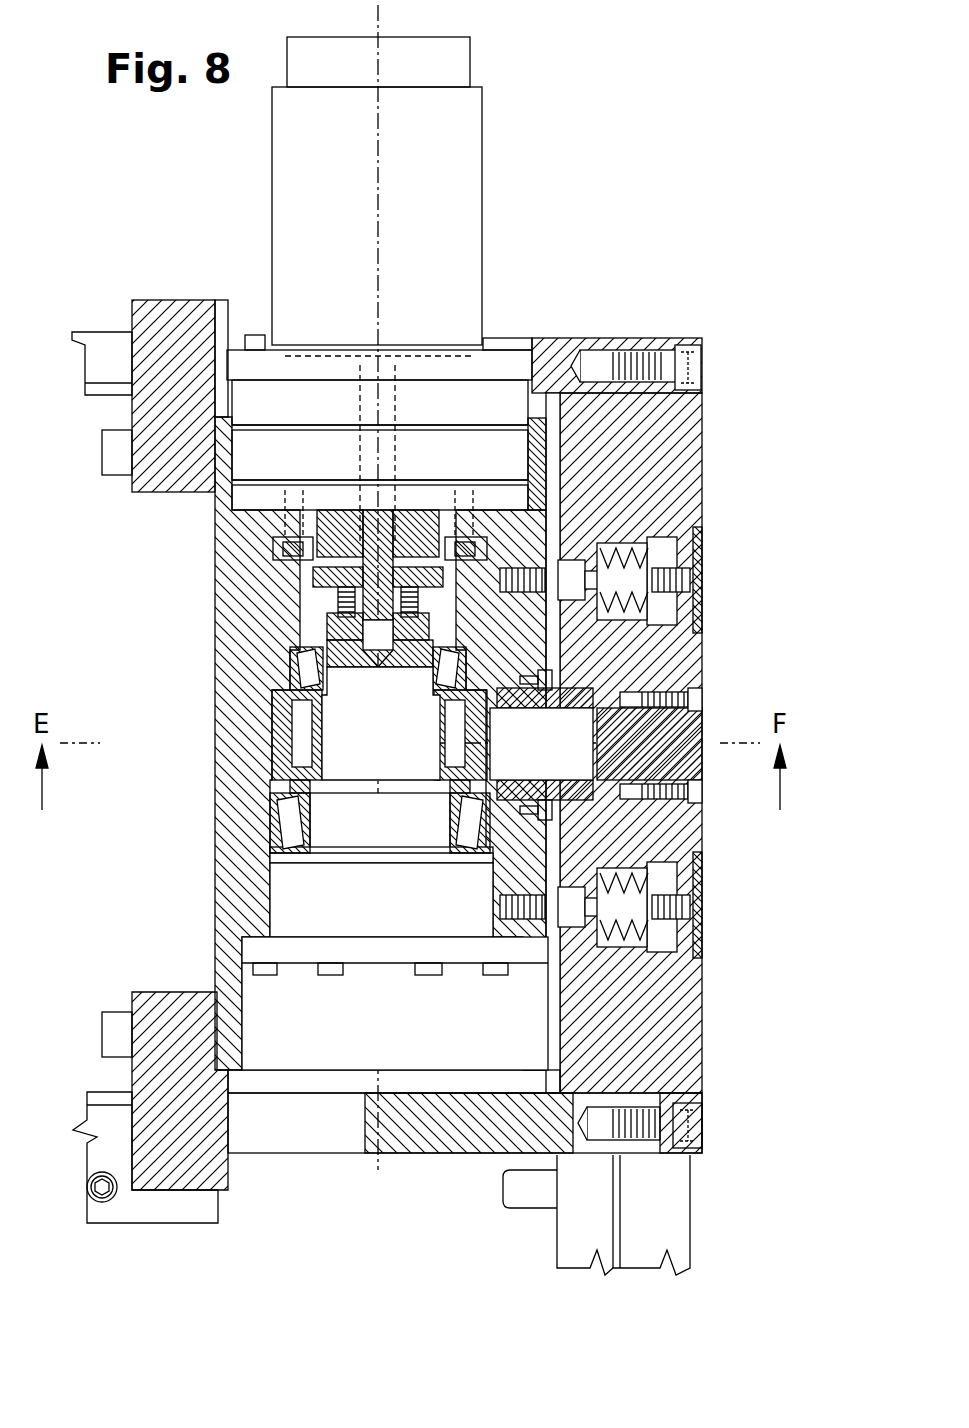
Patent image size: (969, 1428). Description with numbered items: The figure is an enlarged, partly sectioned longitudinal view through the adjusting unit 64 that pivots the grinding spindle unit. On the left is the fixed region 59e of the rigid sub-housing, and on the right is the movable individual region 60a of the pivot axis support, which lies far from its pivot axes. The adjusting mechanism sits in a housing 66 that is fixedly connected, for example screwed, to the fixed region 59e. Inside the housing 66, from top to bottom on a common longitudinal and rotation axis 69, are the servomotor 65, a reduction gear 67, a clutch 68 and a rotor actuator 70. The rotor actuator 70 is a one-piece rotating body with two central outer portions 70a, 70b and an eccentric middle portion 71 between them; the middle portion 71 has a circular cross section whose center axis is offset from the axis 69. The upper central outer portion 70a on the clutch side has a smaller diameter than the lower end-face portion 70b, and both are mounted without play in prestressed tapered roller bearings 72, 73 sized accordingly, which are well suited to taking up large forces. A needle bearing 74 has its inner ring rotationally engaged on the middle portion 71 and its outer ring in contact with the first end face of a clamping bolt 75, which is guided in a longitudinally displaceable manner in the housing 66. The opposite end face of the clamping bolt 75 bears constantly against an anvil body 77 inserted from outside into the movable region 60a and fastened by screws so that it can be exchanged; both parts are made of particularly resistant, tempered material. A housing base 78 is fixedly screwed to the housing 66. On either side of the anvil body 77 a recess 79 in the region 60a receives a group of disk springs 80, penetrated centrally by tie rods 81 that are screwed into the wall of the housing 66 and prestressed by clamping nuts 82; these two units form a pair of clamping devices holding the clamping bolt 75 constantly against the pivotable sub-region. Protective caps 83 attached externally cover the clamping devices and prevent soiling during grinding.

The fixed region of the sub-housing 59e is at (178, 320).
The movable individual region of the pivot axis support 60a is at (693, 430).
The adjusting unit 64 is at (616, 328).
The servomotor 65 is at (458, 174).
The housing 66 is at (232, 817).
The reduction gear 67 is at (485, 393).
The clutch 68 is at (296, 527).
The common longitudinal and rotation axis 69 is at (376, 172).
The rotor actuator 70 is at (342, 757).
The central outer portion 70a is at (350, 641).
The central outer portion 70b is at (332, 830).
The eccentric middle portion 71 is at (322, 700).
The tapered roller bearing 72 is at (556, 673).
The tapered roller bearing 73 is at (556, 808).
The needle bearing 74 is at (318, 740).
The clamping bolt 75 is at (568, 756).
The anvil body 77 is at (700, 732).
The housing base 78 is at (446, 918).
The recess 79 is at (665, 537).
The disk springs 80 is at (658, 570).
The tie rods 81 is at (672, 605).
The clamping nuts 82 is at (680, 886).
The protective caps 83 is at (692, 910).